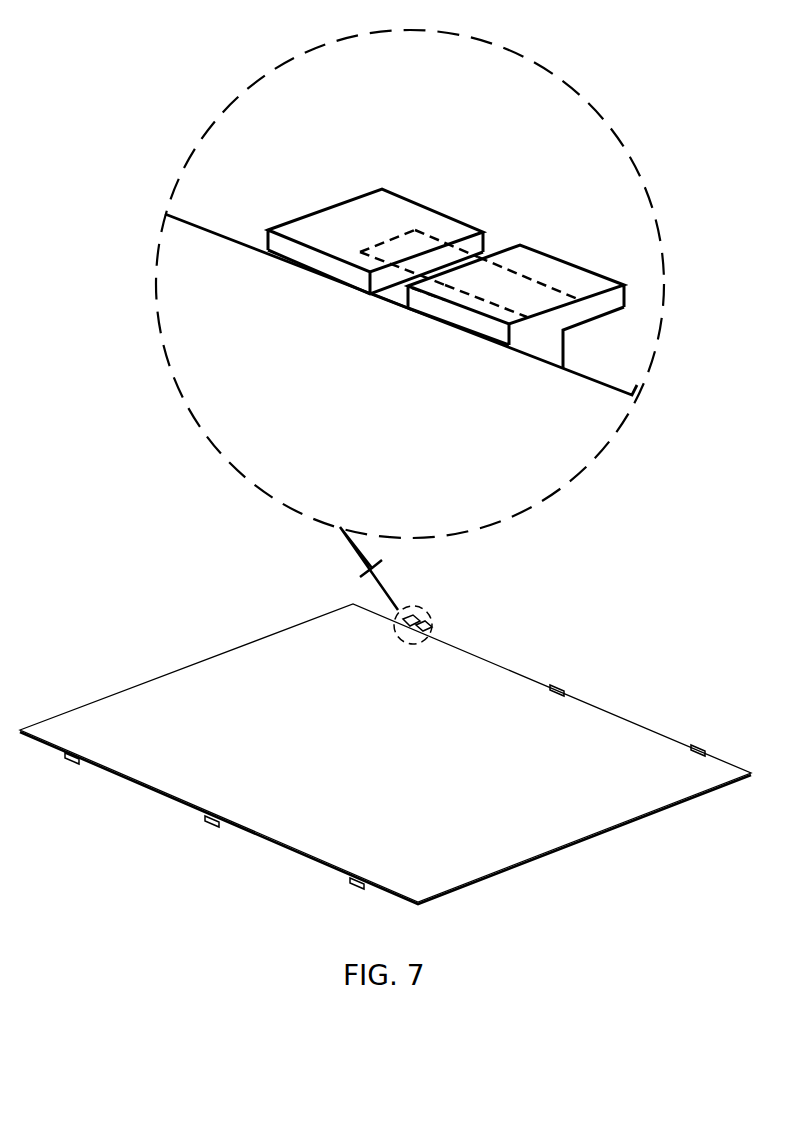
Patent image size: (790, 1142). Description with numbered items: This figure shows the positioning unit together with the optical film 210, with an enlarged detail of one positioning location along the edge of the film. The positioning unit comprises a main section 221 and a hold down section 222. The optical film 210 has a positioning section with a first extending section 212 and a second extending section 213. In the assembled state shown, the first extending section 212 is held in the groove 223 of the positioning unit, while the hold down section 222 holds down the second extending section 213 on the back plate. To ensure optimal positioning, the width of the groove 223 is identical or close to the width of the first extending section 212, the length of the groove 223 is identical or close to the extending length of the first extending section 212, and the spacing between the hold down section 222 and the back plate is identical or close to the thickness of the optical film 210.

The optical film 210 is at (247, 665).
The main section 221 is at (545, 343).
The hold down section 222 is at (355, 218).
The first extending section 212 is at (403, 292).
The second extending section 213 is at (490, 278).
The groove 223 is at (381, 300).